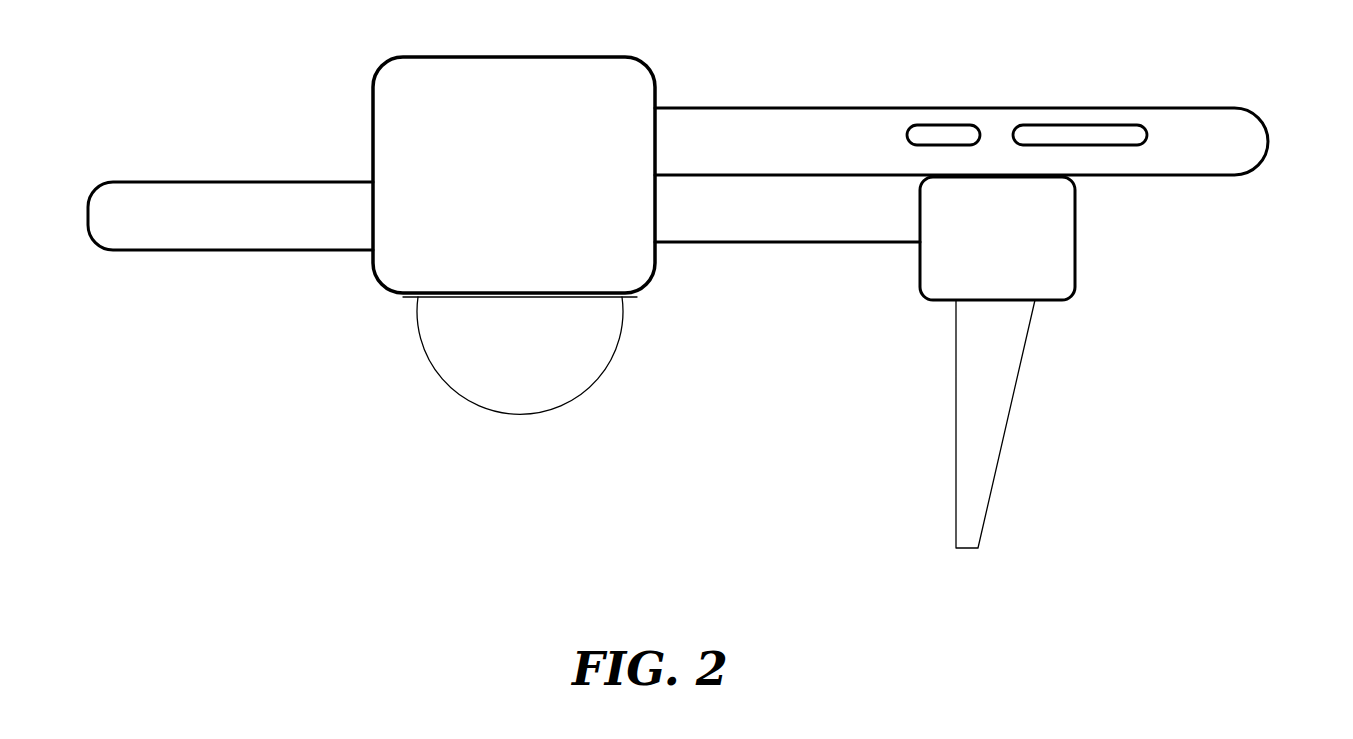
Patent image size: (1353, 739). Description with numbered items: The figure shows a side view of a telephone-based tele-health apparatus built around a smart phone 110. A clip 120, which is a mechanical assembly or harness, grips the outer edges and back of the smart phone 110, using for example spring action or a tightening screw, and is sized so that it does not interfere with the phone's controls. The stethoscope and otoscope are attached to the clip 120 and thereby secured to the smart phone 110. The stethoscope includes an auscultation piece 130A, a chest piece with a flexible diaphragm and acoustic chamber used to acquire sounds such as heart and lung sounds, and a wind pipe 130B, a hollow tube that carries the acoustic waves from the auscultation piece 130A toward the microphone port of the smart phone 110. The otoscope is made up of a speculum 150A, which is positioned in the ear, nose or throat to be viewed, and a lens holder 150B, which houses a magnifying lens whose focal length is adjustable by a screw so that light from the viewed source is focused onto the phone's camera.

The smart phone 110 is at (1250, 148).
The clip 120 is at (622, 270).
The auscultation piece 130A is at (560, 370).
The wind pipe 130B is at (152, 227).
The speculum 150A is at (957, 418).
The lens holder 150B is at (1076, 252).